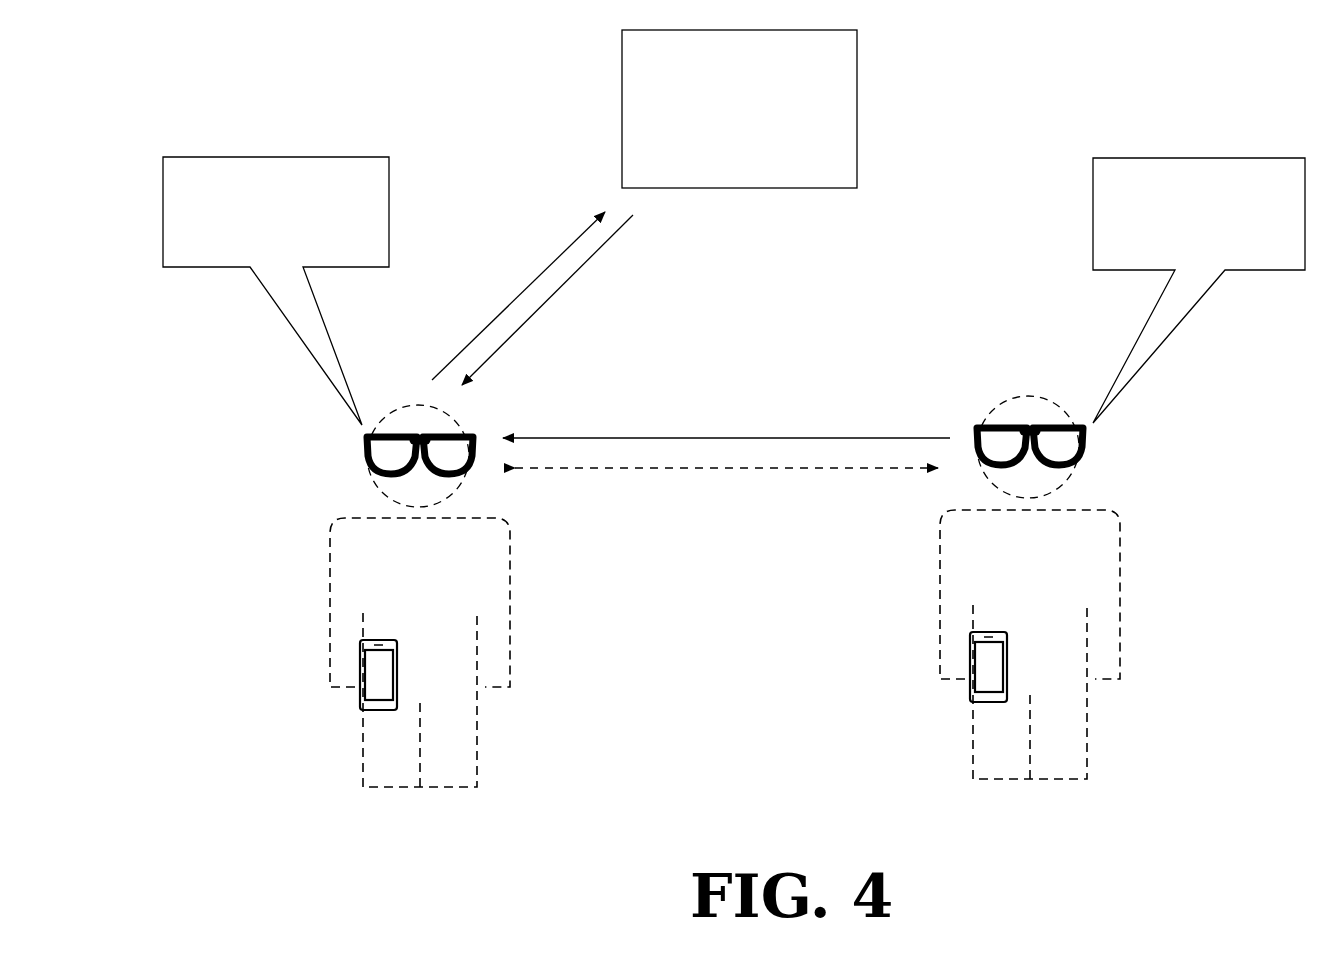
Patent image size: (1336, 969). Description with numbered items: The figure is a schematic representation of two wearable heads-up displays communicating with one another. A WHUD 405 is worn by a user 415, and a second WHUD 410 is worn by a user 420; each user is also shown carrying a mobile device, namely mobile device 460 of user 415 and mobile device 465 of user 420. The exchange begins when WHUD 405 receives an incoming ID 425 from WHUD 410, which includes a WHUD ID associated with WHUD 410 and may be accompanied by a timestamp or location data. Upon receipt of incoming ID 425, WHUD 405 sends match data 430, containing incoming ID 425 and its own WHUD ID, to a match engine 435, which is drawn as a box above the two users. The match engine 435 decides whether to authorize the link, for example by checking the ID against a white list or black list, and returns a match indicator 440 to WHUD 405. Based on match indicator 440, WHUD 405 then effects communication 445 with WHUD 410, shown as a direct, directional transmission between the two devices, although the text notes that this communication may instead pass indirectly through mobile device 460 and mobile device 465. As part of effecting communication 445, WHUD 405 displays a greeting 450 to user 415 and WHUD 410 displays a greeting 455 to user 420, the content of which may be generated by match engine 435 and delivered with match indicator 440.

The WHUD 405 is at (356, 460).
The second WHUD 410 is at (1086, 440).
The user 415 is at (340, 535).
The user 420 is at (1118, 538).
The incoming ID 425 is at (840, 437).
The match data 430 is at (570, 246).
The match engine 435 is at (739, 109).
The match indicator 440 is at (533, 317).
The communication 445 is at (735, 480).
The greeting 450 is at (287, 157).
The greeting 455 is at (1196, 158).
The mobile device 460 is at (360, 705).
The mobile device 465 is at (970, 695).